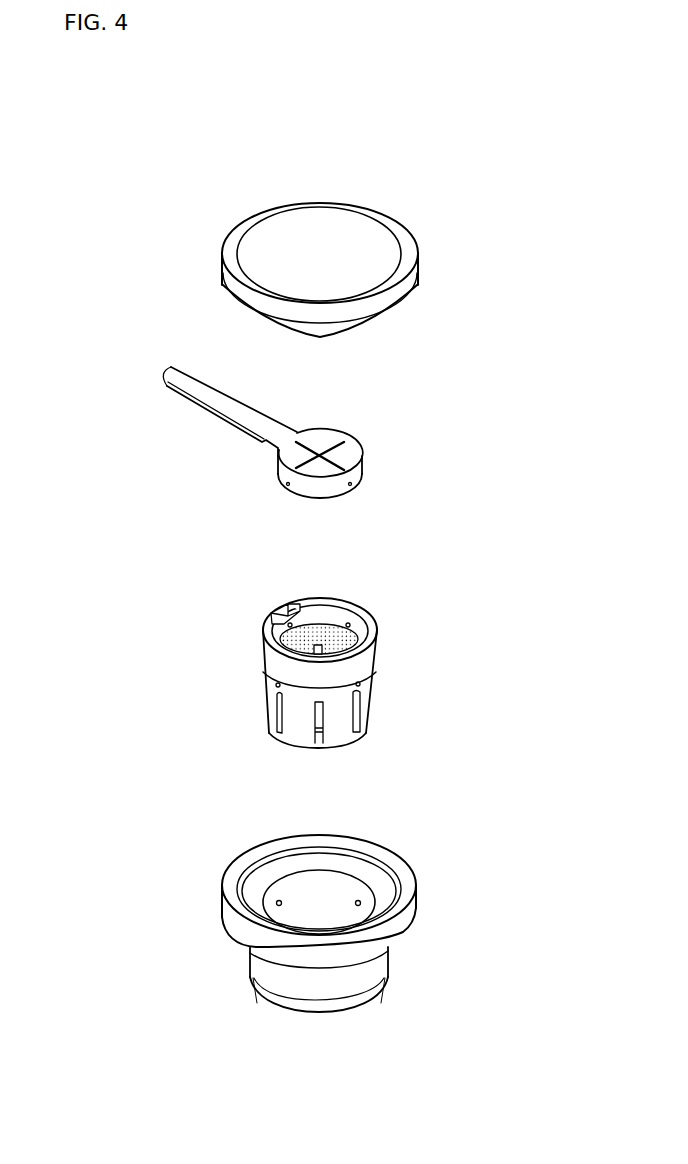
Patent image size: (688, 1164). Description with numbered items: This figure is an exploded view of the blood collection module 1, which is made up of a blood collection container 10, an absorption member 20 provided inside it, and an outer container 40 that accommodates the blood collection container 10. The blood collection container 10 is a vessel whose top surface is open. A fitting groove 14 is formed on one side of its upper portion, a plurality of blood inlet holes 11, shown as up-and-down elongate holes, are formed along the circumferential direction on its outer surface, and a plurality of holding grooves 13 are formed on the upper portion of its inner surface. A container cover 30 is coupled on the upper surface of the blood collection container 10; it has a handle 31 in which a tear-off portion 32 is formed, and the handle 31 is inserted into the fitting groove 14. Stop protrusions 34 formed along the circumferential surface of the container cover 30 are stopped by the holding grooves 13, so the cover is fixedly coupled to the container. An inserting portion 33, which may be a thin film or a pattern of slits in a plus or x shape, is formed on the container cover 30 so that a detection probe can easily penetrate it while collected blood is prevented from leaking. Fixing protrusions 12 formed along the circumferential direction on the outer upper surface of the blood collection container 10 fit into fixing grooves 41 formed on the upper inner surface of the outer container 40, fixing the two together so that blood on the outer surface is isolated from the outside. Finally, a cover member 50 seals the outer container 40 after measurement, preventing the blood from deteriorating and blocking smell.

The blood collection module 1 is at (108, 216).
The cover member 50 is at (357, 237).
The container cover 30 is at (360, 465).
The handle 31 is at (185, 379).
The tear-off portion 32 is at (262, 443).
The inserting portion 33 is at (355, 437).
The stop protrusions 34 is at (357, 487).
The blood collection container 10 is at (367, 660).
The blood inlet holes 11 is at (280, 714).
The fixing protrusions 12 is at (277, 683).
The holding grooves 13 is at (348, 625).
The fitting groove 14 is at (280, 608).
The absorption member 20 is at (300, 640).
The outer container 40 is at (405, 922).
The fixing grooves 41 is at (277, 904).